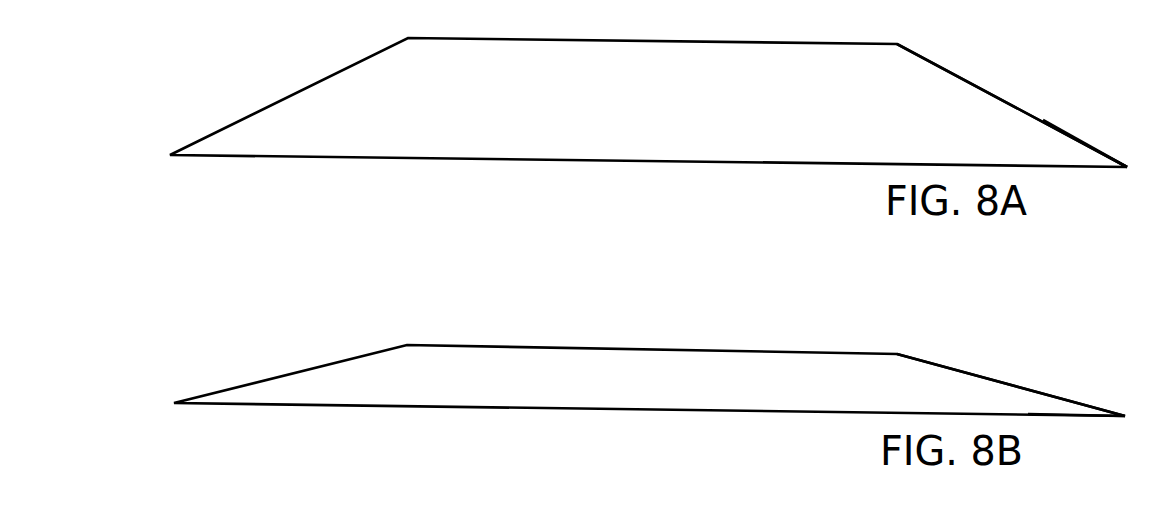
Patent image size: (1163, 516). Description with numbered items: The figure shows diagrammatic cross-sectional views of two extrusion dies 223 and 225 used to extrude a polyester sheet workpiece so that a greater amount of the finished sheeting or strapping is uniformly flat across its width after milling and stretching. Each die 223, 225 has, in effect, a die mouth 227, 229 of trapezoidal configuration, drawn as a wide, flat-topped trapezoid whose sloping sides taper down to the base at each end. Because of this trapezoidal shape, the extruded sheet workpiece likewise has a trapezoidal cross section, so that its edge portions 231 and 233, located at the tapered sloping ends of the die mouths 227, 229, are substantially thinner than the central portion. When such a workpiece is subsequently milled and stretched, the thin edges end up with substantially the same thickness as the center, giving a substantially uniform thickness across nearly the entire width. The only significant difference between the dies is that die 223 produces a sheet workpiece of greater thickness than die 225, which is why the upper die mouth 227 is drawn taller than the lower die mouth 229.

In FIG. 8A, the extrusion die 223 is at (1002, 98).
In FIG. 8B, the extrusion die 225 is at (977, 373).
In FIG. 8A, the die mouth 227 is at (620, 119).
In FIG. 8B, the die mouth 229 is at (582, 393).
In FIG. 8A, the edge portion 231 is at (1033, 145).
In FIG. 8B, the edge portion 233 is at (1028, 408).